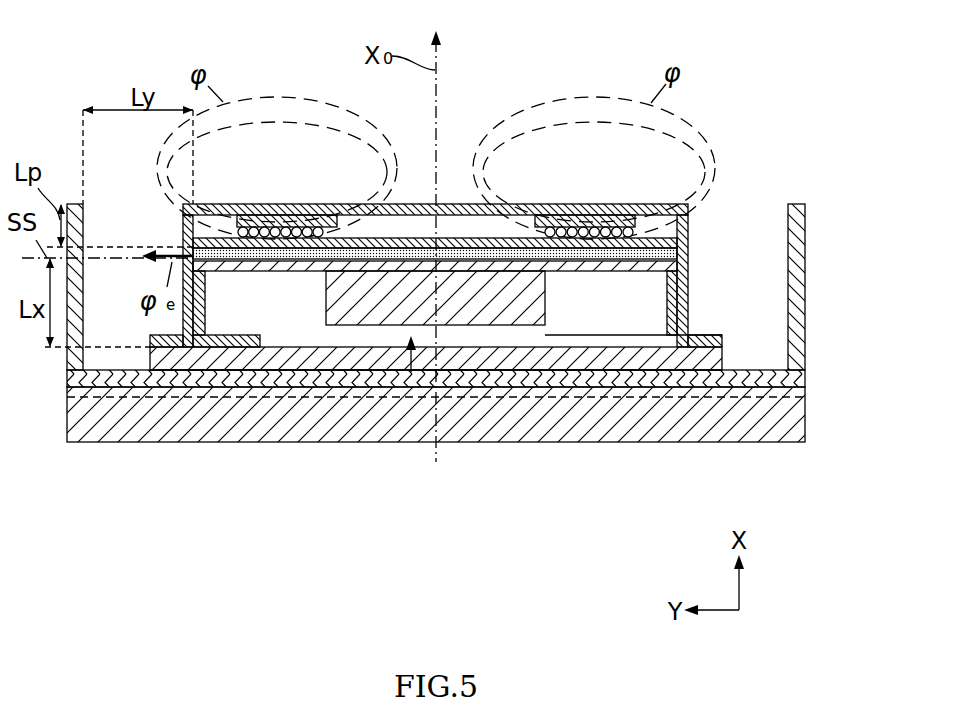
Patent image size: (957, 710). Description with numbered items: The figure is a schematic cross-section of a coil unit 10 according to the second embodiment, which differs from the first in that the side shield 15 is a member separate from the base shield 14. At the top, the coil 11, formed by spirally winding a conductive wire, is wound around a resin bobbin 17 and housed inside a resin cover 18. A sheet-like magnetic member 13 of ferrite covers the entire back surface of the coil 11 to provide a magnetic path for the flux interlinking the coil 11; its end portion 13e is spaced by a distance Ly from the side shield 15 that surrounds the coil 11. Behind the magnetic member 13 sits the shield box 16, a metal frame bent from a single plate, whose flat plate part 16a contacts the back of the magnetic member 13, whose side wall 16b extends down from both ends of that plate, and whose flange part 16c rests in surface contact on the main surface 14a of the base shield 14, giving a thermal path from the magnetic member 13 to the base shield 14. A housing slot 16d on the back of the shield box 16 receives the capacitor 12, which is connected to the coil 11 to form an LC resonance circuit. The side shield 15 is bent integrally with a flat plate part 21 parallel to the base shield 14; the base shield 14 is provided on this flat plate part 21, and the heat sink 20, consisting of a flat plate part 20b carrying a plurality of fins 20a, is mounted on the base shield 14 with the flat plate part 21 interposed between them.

The coil unit 10 is at (558, 35).
The coil 11 is at (285, 227).
The capacitor 12 is at (537, 303).
The magnetic member 13 is at (689, 252).
The end portion of the magnetic member 13e is at (193, 257).
The base shield 14 is at (722, 357).
The main surface of the base shield 14a is at (597, 333).
The side shield 15 is at (80, 202).
The shield box 16 is at (429, 316).
The flat plate part of the shield box 16a is at (222, 247).
The side wall of the shield box 16b is at (178, 337).
The flange part of the shield box 16c is at (230, 338).
The housing slot 16d is at (411, 372).
The resin bobbin 17 is at (587, 218).
The resin cover 18 is at (690, 282).
The heat sink 20 is at (495, 418).
The fins 20a is at (790, 415).
The flat plate part of the heat sink 20b is at (805, 383).
The flat plate part 21 is at (552, 383).